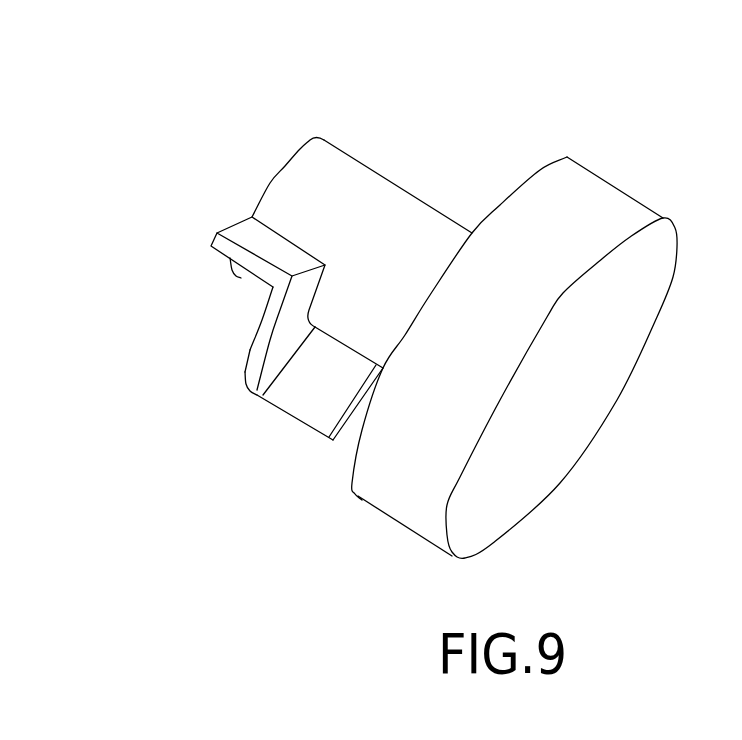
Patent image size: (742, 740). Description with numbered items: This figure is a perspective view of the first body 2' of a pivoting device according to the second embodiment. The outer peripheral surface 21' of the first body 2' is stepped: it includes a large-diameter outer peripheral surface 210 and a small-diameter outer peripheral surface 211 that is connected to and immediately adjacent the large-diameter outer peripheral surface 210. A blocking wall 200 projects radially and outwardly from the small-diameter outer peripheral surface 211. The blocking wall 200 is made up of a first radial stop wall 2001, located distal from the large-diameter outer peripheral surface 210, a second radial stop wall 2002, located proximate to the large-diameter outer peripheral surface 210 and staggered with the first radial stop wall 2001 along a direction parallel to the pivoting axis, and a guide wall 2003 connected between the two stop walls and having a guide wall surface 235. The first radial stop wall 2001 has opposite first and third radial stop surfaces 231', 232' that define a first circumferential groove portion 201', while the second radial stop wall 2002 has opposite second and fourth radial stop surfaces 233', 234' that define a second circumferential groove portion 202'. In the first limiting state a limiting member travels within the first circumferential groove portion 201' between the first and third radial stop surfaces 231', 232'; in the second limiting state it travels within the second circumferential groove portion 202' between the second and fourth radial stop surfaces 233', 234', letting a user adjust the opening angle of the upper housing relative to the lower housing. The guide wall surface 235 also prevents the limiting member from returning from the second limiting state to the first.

The blocking wall 200 is at (258, 318).
The first radial stop wall 2001 is at (227, 255).
The second radial stop wall 2002 is at (275, 406).
The guide wall 2003 is at (245, 370).
The first circumferential groove portion 201' is at (308, 134).
The second circumferential groove portion 202' is at (390, 192).
The first radial stop surface 231' is at (246, 218).
The third radial stop surface 232' is at (176, 333).
The second radial stop surface 233' is at (313, 425).
The fourth radial stop surface 234' is at (306, 475).
The guide wall surface 235 is at (248, 358).
The first body 2' is at (520, 344).
The outer peripheral surface 21' is at (535, 350).
The large-diameter outer peripheral surface 210 is at (575, 172).
The small-diameter outer peripheral surface 211 is at (423, 263).